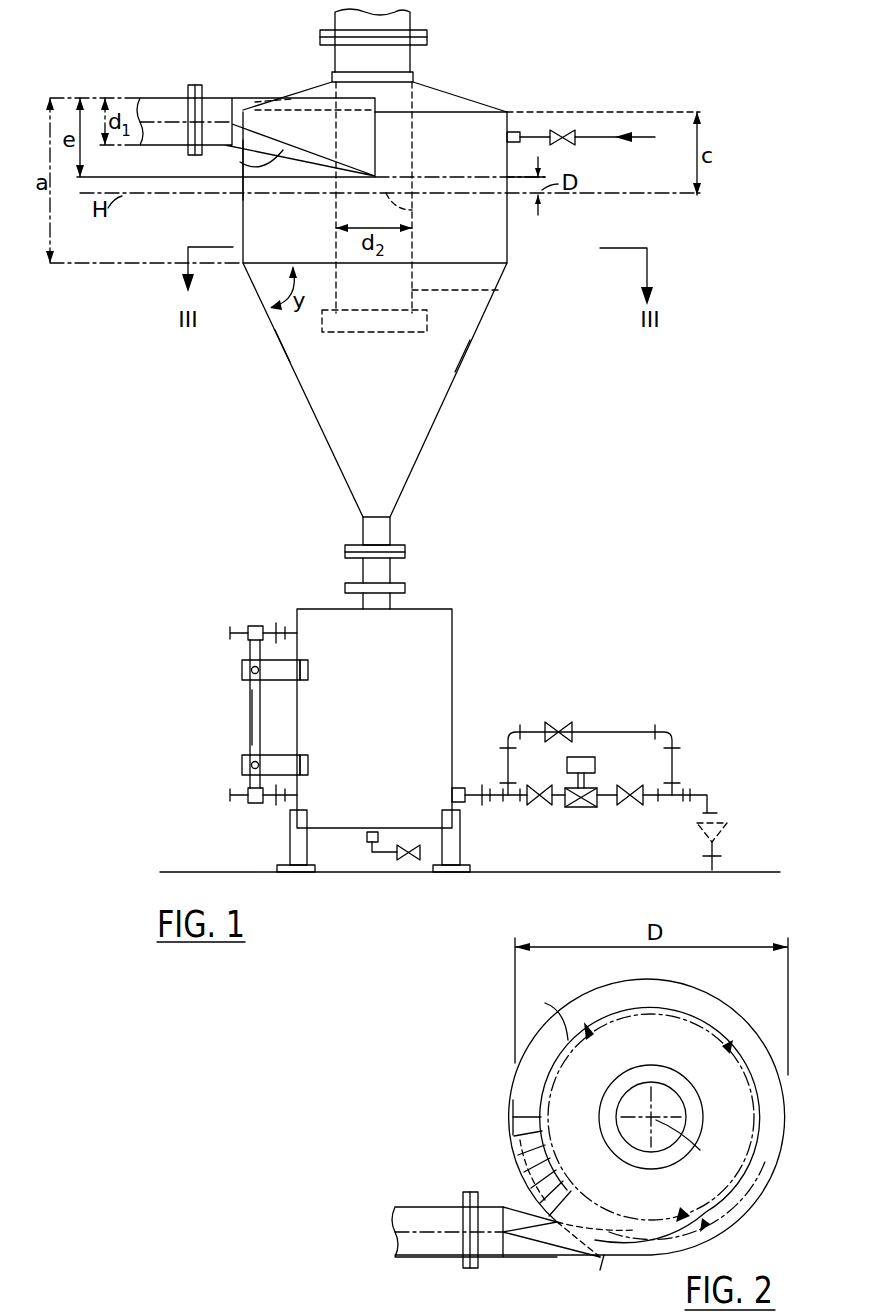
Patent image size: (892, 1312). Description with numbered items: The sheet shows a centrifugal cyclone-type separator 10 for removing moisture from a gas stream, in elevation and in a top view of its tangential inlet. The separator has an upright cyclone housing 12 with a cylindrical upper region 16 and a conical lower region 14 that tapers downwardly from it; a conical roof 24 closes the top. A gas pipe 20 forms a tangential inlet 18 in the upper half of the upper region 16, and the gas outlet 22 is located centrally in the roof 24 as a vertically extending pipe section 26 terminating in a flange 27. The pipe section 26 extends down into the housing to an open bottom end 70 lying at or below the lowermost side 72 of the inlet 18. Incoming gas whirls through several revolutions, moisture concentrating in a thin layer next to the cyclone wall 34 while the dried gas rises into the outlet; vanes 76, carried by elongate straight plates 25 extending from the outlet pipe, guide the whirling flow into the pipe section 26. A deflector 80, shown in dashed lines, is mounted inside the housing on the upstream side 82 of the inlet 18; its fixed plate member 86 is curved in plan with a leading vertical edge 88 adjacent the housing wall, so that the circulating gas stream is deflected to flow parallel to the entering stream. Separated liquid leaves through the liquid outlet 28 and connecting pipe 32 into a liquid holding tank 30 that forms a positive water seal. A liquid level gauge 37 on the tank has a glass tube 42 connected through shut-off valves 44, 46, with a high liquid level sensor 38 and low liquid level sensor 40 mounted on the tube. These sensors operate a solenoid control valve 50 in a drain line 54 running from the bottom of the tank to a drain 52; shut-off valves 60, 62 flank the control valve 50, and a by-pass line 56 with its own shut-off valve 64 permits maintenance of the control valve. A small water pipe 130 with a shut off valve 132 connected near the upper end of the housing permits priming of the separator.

In FIG. 1, the centrifugal type separator 10 is at (512, 325).
In FIG. 2, the centrifugal type separator 10 is at (752, 998).
In FIG. 1, the cyclone housing 12 is at (507, 232).
In FIG. 2, the cyclone housing 12 is at (758, 1050).
In FIG. 1, the conical lower region 14 is at (425, 430).
In FIG. 1, the cylindrical upper region 16 is at (255, 216).
In FIG. 2, the cylindrical upper region 16 is at (520, 1072).
In FIG. 1, the tangential inlet 18 is at (265, 128).
In FIG. 2, the tangential inlet 18 is at (515, 1250).
In FIG. 2, the gas pipe 20 is at (422, 1207).
In FIG. 1, the gas outlet 22 is at (332, 78).
In FIG. 2, the gas outlet 22 is at (675, 1100).
In FIG. 1, the roof 24 is at (430, 82).
In FIG. 2, the roof 24 is at (760, 1105).
In FIG. 1, the elongate straight plates 25 is at (500, 290).
In FIG. 1, the pipe section 26 is at (335, 60).
In FIG. 1, the flange 27 is at (400, 55).
In FIG. 1, the liquid outlet 28 is at (383, 535).
In FIG. 1, the liquid holding tank 30 is at (458, 655).
In FIG. 1, the connecting pipe 32 is at (383, 573).
In FIG. 1, the cyclone wall 34 is at (462, 357).
In FIG. 1, the liquid level gauge 37 is at (250, 697).
In FIG. 1, the high liquid level sensor 38 is at (248, 668).
In FIG. 1, the low liquid level sensor 40 is at (250, 765).
In FIG. 1, the glass tube 42 is at (252, 735).
In FIG. 1, the shut-off valve 44 is at (232, 632).
In FIG. 1, the shut-off valve 46 is at (245, 800).
In FIG. 1, the solenoid control valve 50 is at (583, 758).
In FIG. 1, the drain 52 is at (727, 836).
In FIG. 1, the drain line 54 is at (497, 793).
In FIG. 1, the by-pass line 56 is at (640, 732).
In FIG. 1, the shut-off valve 60 is at (545, 806).
In FIG. 1, the shut-off valve 62 is at (633, 806).
In FIG. 1, the shut-off valve 64 is at (553, 727).
In FIG. 1, the open bottom end 70 is at (412, 210).
In FIG. 1, the lowermost side 72 is at (243, 163).
In FIG. 1, the vanes 76 is at (312, 327).
In FIG. 2, the deflector 80 is at (550, 1224).
In FIG. 2, the upstream side 82 is at (555, 1220).
In FIG. 2, the fixed plate member 86 is at (537, 1178).
In FIG. 2, the leading vertical edge 88 is at (515, 1108).
In FIG. 1, the water pipe 130 is at (598, 136).
In FIG. 1, the shut off valve 132 is at (560, 130).